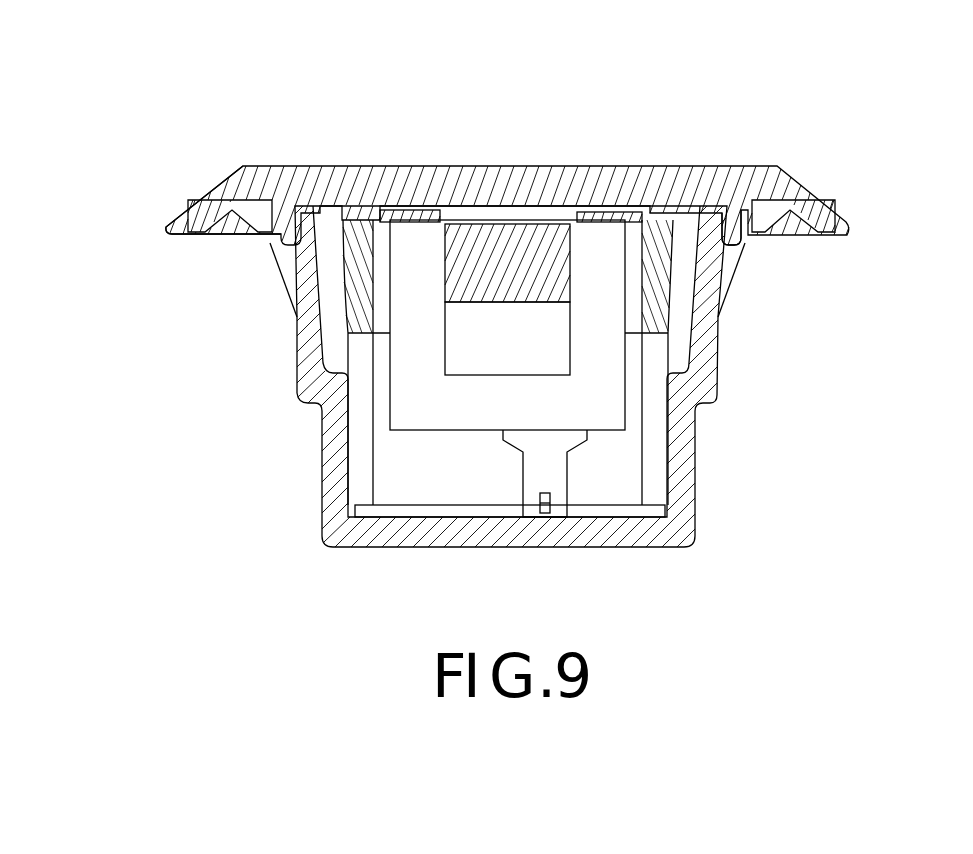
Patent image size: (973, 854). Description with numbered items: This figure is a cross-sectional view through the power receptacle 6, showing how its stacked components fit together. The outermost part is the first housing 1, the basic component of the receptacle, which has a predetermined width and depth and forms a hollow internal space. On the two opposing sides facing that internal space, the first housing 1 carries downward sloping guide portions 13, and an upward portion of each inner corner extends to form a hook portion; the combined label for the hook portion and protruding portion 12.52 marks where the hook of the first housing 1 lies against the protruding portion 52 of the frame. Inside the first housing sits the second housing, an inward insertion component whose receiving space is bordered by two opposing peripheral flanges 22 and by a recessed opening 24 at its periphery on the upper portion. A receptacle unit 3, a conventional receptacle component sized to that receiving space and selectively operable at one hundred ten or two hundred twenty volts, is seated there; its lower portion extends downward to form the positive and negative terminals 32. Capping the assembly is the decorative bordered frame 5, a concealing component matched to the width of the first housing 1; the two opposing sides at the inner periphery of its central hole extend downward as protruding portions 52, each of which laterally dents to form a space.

The first housing 1 is at (707, 376).
The receptacle unit 3 is at (497, 180).
The decorative bordered frame 5 is at (206, 200).
The power receptacle 6 is at (790, 468).
The hook portion and protruding portion 12.52 is at (735, 212).
The downward sloping guide portions 13 is at (672, 293).
The peripheral flanges 22 is at (416, 232).
The recessed opening 24 is at (641, 183).
The positive and negative terminals 32 is at (558, 477).
The protruding portion 52 is at (739, 200).